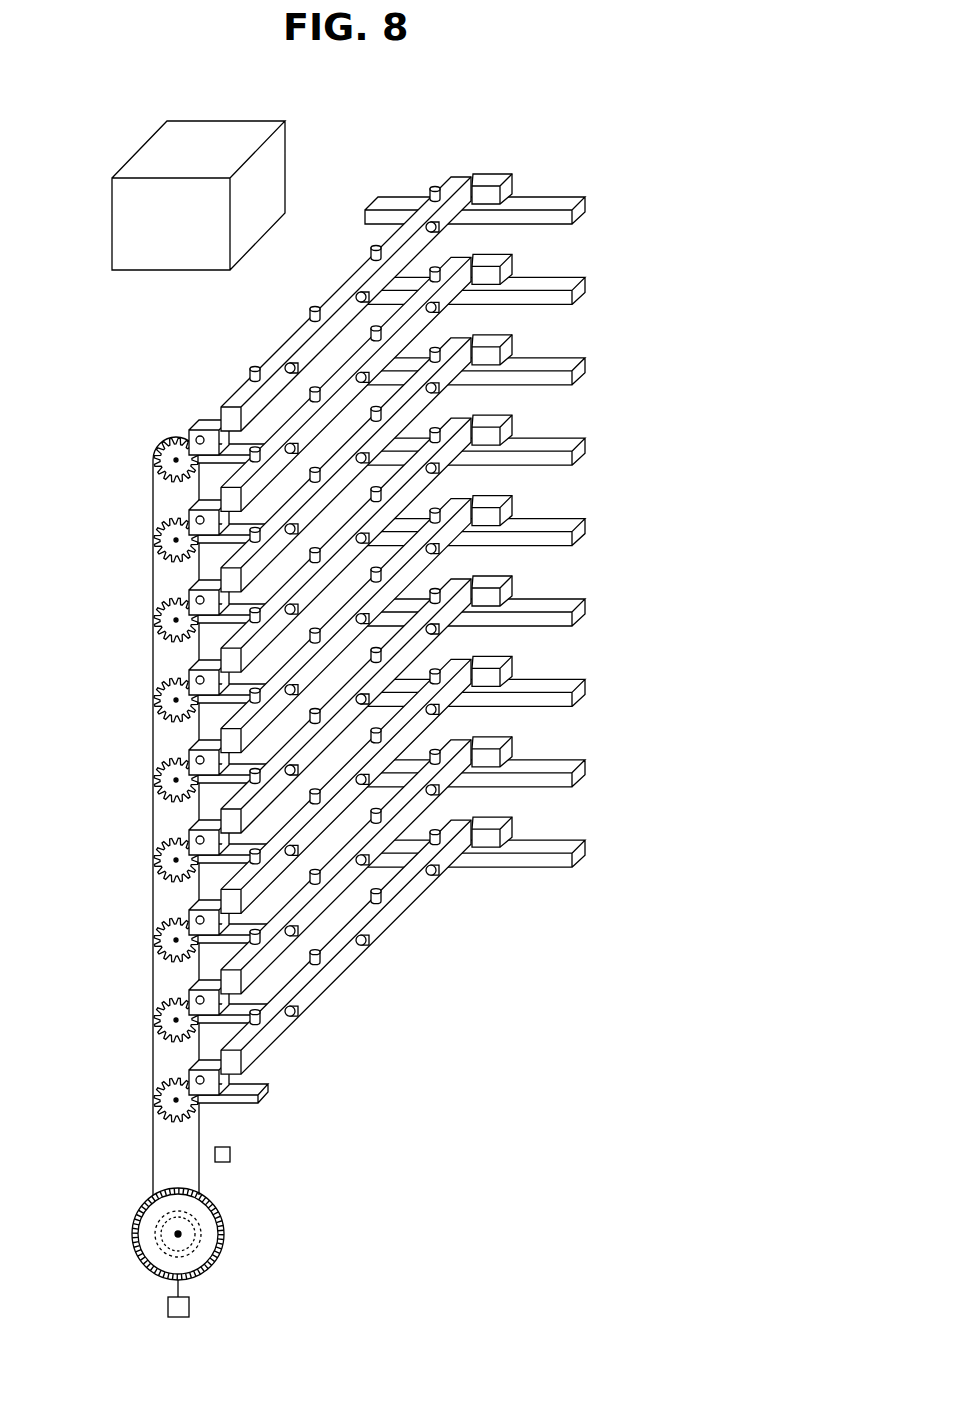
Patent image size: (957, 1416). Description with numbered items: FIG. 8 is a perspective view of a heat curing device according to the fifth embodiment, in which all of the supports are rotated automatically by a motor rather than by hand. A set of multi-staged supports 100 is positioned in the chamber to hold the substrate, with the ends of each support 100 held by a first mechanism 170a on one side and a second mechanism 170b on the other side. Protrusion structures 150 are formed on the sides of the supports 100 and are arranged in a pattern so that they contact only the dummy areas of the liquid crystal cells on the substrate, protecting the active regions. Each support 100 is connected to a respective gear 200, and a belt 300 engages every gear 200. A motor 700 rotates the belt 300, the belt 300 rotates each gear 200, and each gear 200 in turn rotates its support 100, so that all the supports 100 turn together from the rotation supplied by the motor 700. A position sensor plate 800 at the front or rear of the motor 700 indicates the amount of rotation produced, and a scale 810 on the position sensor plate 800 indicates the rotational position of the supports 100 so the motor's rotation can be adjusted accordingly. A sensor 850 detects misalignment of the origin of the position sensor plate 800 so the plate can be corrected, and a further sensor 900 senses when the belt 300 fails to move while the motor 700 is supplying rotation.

The support 100 is at (290, 345).
The protrusion structure 150 is at (312, 307).
The first mechanism 170a is at (208, 428).
The second mechanism 170b is at (500, 177).
The gear 200 is at (176, 440).
The belt 300 is at (150, 508).
The motor 700 is at (192, 1226).
The position sensor plate 800 is at (222, 1228).
The scale 810 is at (224, 1254).
The sensor 850 is at (190, 1307).
The sensor 900 is at (231, 1154).